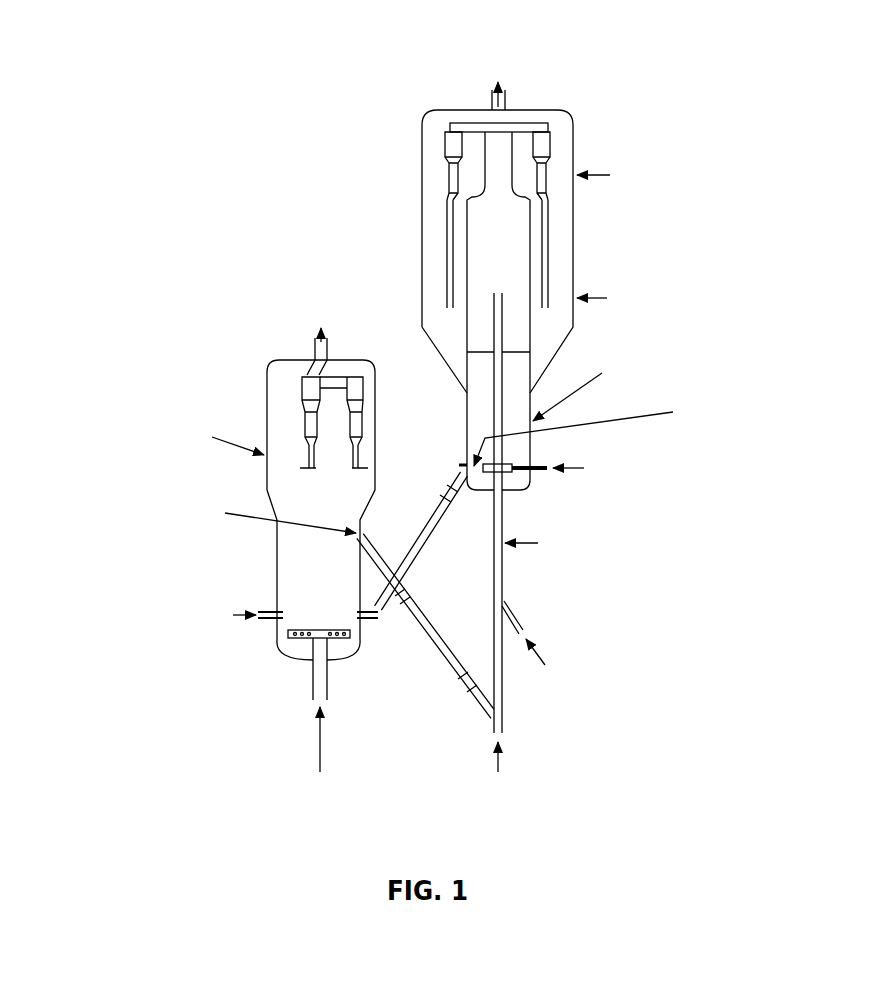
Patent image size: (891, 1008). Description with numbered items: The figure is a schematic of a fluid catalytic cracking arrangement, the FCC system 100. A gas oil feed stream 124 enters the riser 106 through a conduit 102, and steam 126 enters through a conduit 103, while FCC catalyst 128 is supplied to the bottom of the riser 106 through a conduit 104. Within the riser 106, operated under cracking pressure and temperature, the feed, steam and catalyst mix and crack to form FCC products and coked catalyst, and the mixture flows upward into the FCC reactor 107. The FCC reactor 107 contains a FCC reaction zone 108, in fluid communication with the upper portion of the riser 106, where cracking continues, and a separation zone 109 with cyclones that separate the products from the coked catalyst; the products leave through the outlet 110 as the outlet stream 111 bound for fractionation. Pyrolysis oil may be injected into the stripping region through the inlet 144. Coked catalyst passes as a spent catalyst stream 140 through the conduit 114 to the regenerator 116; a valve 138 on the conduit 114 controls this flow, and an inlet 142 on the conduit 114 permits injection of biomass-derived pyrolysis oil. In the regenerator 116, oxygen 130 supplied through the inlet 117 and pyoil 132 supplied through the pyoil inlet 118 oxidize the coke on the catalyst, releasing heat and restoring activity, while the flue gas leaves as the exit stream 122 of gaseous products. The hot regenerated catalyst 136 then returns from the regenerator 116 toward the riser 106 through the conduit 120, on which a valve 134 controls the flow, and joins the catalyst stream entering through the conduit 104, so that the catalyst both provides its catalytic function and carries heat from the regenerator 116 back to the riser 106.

The FCC system 100 is at (773, 161).
The conduit 102 is at (506, 612).
The conduit 103 is at (546, 472).
The conduit 104 is at (503, 738).
The riser 106 is at (504, 578).
The FCC reactor 107 is at (578, 253).
The FCC reaction zone 108 is at (467, 402).
The separation zone 109 is at (575, 225).
The outlet 110 is at (507, 96).
The outlet stream 111 is at (548, 48).
The conduit 114 is at (430, 545).
The regenerator 116 is at (267, 392).
The inlet 117 is at (312, 700).
The pyoil inlet 118 is at (262, 625).
The conduit 120 is at (418, 628).
The exit stream 122 is at (314, 360).
The feed stream 124 is at (600, 690).
The steam 126 is at (628, 482).
The FCC catalyst 128 is at (560, 813).
The oxygen 130 is at (268, 750).
The pyoil 132 is at (152, 614).
The valve 134 is at (463, 684).
The regenerated catalyst 136 is at (85, 520).
The valve 138 is at (318, 267).
The spent catalyst stream 140 is at (796, 394).
The inlet 142 is at (443, 498).
The inlet 144 is at (458, 467).